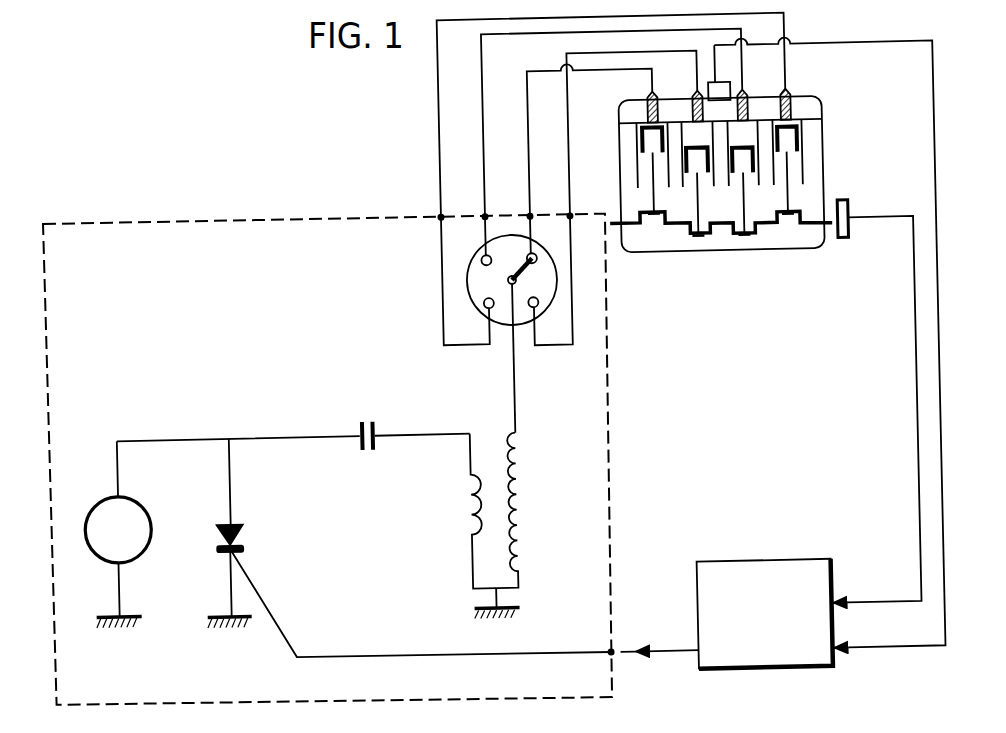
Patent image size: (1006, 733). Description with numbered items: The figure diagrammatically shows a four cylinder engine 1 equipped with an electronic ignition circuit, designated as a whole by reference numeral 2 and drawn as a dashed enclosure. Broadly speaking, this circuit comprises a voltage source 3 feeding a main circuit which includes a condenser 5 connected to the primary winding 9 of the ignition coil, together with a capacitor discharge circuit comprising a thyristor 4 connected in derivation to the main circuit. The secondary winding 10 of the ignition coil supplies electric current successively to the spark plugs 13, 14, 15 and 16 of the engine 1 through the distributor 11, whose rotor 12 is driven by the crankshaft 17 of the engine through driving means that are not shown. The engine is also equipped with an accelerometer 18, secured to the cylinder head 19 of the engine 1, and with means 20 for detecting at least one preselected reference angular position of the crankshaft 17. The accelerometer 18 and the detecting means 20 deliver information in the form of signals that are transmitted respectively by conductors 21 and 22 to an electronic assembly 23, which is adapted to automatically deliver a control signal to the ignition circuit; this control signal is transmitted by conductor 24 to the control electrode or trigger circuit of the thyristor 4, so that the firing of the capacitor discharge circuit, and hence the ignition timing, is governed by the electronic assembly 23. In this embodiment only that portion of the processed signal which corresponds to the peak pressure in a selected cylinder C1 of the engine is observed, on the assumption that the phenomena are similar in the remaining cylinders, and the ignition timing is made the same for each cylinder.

The four cylinder engine 1 is at (828, 147).
The electronic ignition circuit 2 is at (152, 213).
The voltage source 3 is at (141, 495).
The thyristor 4 is at (244, 535).
The condenser 5 is at (366, 455).
The primary winding 9 is at (460, 507).
The secondary winding 10 is at (519, 506).
The distributor 11 is at (527, 333).
The rotor 12 is at (525, 268).
The spark plug 13 is at (654, 103).
The spark plug 14 is at (700, 101).
The spark plug 15 is at (797, 101).
The spark plug 16 is at (754, 100).
The crankshaft 17 is at (646, 226).
The accelerometer 18 is at (727, 92).
The cylinder head 19 is at (821, 118).
The detecting means 20 is at (846, 244).
The conductor 21 is at (942, 315).
The conductor 22 is at (914, 315).
The electronic assembly 23 is at (754, 566).
The conductor 24 is at (641, 658).
The selected cylinder C1 is at (753, 138).